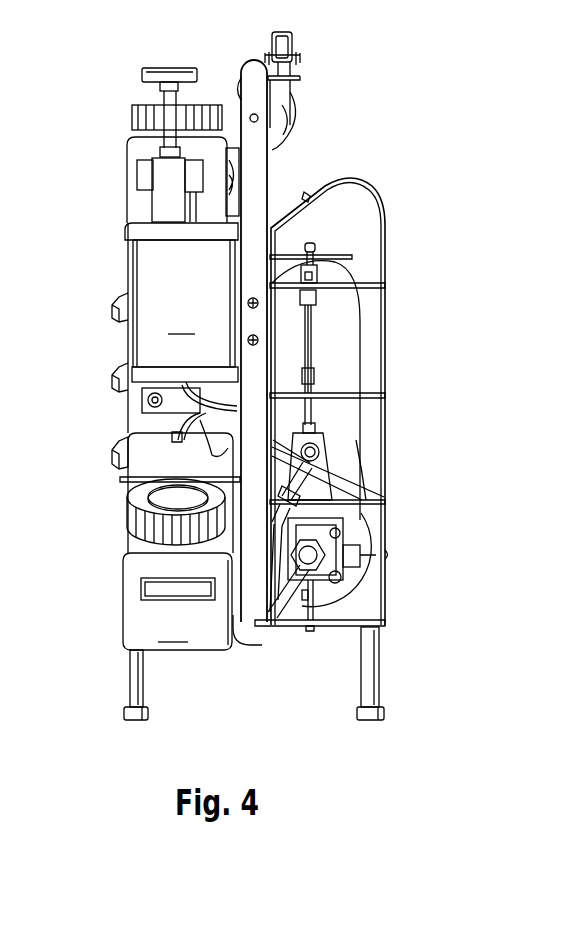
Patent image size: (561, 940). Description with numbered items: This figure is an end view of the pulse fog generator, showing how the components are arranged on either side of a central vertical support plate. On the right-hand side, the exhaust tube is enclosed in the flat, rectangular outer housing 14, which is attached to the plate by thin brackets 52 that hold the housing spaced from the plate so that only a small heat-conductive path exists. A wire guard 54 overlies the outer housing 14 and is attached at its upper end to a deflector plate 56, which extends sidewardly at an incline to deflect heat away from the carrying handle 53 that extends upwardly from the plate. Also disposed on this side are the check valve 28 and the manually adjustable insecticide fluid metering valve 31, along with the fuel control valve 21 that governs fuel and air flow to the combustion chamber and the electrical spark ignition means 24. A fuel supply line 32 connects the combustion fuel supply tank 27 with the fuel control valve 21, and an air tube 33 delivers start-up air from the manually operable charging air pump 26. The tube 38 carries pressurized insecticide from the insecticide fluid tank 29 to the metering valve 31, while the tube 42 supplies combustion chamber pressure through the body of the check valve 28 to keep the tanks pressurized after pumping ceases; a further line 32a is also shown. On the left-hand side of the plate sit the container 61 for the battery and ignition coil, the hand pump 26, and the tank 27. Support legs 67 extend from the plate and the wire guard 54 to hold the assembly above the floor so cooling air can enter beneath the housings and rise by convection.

The outer housing 14 is at (360, 350).
The fuel control valve 21 is at (338, 488).
The electrical spark ignition means 24 is at (368, 594).
The charging air pump 26 is at (138, 172).
The combustion fuel supply tank 27 is at (191, 541).
The check valve 28 is at (320, 275).
The insecticide fluid tank 29 is at (127, 143).
The insecticide fluid metering valve 31 is at (253, 55).
The fuel supply line 32 is at (278, 546).
The hose 32a is at (360, 440).
The air tube 33 is at (283, 450).
The tube 38 is at (276, 127).
The tube 42 is at (291, 608).
The brackets 52 is at (278, 255).
The carrying handle 53 is at (252, 97).
The wire guard 54 is at (385, 222).
The deflector plate 56 is at (291, 206).
The container 61 is at (175, 346).
The support legs 67 is at (133, 688).